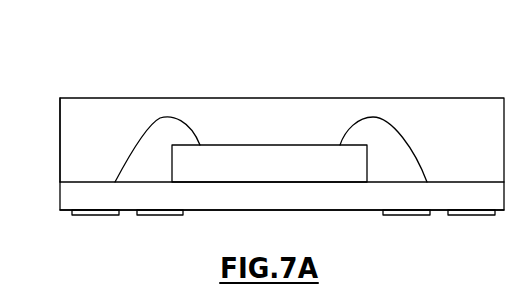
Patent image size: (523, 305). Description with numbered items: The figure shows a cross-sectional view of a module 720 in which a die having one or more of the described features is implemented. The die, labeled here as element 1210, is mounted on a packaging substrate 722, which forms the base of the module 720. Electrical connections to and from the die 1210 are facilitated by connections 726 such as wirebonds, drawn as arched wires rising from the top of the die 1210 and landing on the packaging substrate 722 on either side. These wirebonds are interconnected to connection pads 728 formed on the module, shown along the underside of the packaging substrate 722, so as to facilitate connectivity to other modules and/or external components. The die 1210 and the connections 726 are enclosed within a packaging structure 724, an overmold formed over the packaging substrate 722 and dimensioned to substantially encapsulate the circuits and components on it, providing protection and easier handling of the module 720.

The module 720 is at (345, 76).
The packaging substrate 722 is at (76, 197).
The encapsulant / module body 724 is at (102, 113).
The connections 726 is at (158, 117).
The connection pads 728 is at (93, 215).
The die / semiconductor chip 1210 is at (240, 163).